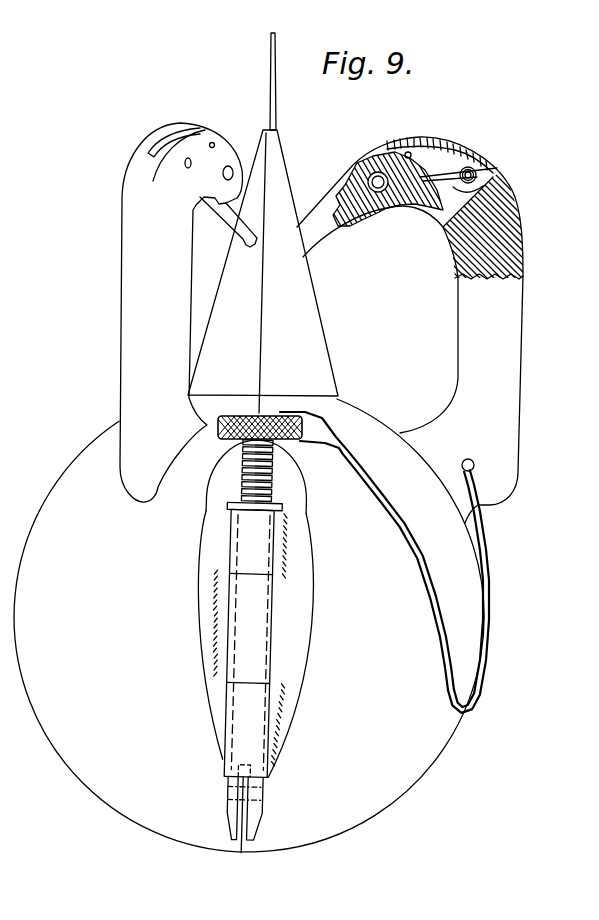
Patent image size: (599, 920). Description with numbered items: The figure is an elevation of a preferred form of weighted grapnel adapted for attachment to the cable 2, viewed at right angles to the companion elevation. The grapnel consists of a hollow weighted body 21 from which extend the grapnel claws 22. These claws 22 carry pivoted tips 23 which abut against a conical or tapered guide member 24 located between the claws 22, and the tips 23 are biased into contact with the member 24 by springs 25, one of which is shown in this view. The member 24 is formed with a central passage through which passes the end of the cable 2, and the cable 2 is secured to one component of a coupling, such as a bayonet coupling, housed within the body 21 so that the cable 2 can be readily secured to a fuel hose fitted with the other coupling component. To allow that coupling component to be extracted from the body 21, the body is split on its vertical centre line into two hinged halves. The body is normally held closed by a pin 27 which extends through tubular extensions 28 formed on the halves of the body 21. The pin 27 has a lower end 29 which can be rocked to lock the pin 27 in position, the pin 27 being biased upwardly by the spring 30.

The cable 2 is at (271, 95).
The hollow weighted body 21 is at (417, 768).
The grapnel claws 22 is at (128, 358).
The pivoted tips 23 is at (223, 152).
The conical or tapered guide member 24 is at (306, 327).
The spring 25 is at (477, 184).
The pin 27 is at (243, 525).
The tubular extensions 28 is at (277, 644).
The lower end 29 is at (264, 803).
The spring 30 is at (272, 483).